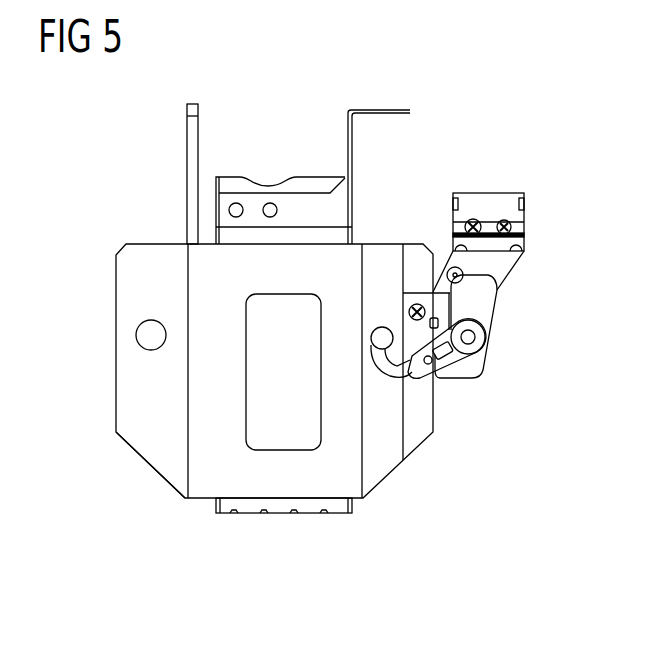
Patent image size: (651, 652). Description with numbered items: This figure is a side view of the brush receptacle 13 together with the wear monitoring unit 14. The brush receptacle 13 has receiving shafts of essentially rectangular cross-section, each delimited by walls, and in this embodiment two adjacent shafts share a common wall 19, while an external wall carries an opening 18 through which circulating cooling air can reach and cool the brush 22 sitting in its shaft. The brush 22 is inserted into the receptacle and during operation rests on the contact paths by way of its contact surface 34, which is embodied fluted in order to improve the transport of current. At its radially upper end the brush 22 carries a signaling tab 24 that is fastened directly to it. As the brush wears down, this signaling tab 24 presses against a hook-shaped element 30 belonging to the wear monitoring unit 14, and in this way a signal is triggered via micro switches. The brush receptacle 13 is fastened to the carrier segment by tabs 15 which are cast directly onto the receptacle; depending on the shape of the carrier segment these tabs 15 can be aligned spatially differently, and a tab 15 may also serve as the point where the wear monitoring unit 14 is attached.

The brush receptacle 13 is at (390, 502).
The wear monitoring unit 14 is at (526, 278).
The tab 15 is at (131, 285).
The opening 18 is at (264, 412).
The wall 19 is at (206, 487).
The brush 22 is at (311, 505).
The signaling tab 24 is at (392, 110).
The hook-shaped element 30 is at (412, 368).
The contact surface 34 is at (252, 524).